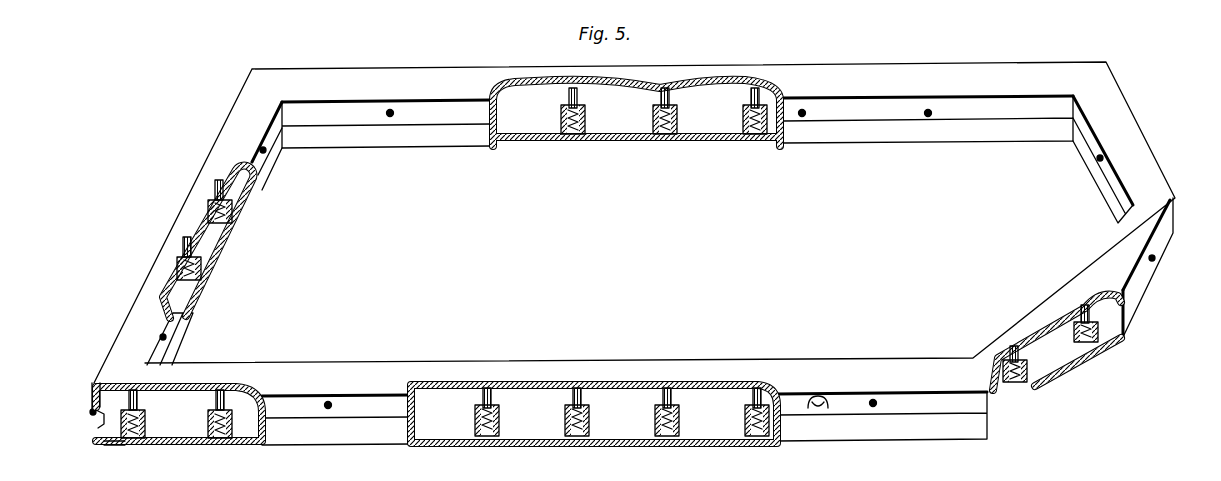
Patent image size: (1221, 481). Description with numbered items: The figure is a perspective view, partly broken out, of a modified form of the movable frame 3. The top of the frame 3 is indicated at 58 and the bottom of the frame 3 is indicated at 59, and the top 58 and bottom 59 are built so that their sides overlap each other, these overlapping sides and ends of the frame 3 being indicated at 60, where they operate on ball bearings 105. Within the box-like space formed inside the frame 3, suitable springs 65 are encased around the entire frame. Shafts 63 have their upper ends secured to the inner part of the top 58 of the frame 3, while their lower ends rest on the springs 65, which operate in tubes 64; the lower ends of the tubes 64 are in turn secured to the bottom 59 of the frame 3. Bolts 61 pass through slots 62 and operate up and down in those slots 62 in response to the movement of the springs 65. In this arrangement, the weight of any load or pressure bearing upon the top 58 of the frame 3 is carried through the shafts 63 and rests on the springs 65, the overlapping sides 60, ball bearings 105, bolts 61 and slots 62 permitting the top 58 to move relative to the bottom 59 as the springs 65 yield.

The frame 3 is at (325, 77).
The sides and ends of frame 60 is at (273, 143).
The bolts 61 is at (268, 150).
The slots 62 is at (100, 422).
The shafts 63 is at (657, 92).
The tubes 64 is at (655, 115).
The springs 65 is at (662, 137).
The top of frame 58 is at (93, 388).
The bottom of frame 59 is at (118, 446).
The ball bearings 105 is at (818, 410).